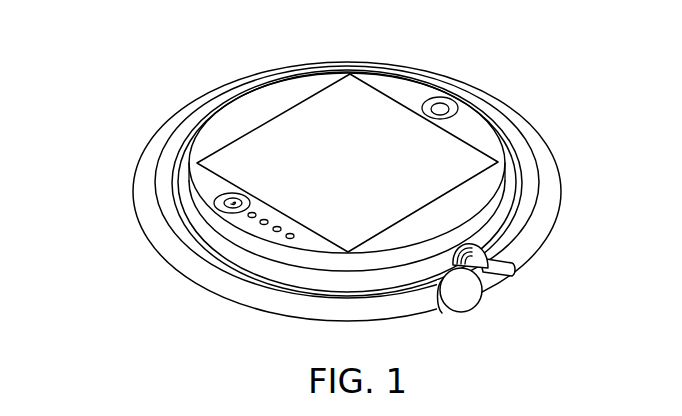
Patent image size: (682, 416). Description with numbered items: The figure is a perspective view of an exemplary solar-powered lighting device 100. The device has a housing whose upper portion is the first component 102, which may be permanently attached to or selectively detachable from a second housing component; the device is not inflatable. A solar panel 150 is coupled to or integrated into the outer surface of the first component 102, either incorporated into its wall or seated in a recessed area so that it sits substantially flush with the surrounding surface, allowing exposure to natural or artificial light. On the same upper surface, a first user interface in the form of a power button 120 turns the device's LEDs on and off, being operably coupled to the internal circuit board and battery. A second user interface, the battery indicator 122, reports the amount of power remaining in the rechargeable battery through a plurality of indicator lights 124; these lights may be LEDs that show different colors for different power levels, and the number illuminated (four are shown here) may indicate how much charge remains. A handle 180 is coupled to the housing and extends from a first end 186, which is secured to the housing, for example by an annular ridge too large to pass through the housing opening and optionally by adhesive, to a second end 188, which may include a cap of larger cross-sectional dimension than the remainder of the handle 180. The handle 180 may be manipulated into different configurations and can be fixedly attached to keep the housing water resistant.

The solar-powered lighting device 100 is at (105, 85).
The first component 102 is at (458, 205).
The power button 120 is at (441, 106).
The battery indicator 122 is at (228, 200).
The indicator lights 124 is at (249, 215).
The solar panel 150 is at (290, 125).
The handle 180 is at (532, 134).
The first end of the handle 186 is at (487, 263).
The second end of the handle 188 is at (459, 300).